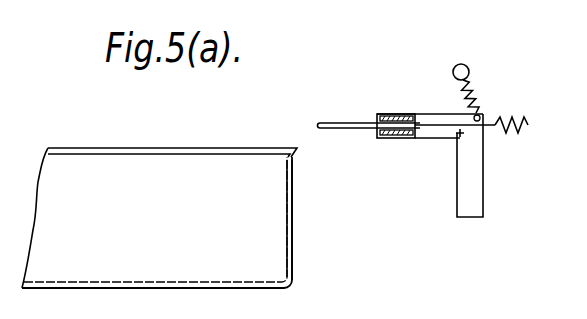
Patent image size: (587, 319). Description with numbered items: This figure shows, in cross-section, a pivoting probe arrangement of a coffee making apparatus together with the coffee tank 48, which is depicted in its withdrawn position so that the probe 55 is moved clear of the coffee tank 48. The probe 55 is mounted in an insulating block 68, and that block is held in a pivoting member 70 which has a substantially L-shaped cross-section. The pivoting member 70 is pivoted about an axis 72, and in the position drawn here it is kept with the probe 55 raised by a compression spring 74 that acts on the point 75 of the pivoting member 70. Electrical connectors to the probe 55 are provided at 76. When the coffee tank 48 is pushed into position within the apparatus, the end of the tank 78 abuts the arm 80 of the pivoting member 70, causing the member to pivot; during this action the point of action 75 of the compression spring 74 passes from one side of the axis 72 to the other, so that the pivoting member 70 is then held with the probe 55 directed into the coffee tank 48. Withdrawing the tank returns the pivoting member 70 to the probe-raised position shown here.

The coffee tank 48 is at (186, 237).
The probe 55 is at (328, 121).
The insulating block 68 is at (395, 116).
The pivoting member 70 is at (434, 113).
The axis 72 is at (459, 134).
The compression spring 74 is at (473, 86).
The point 75 is at (483, 115).
The electrical connectors 76 is at (530, 122).
The end of the tank 78 is at (293, 210).
The arm 80 is at (475, 210).